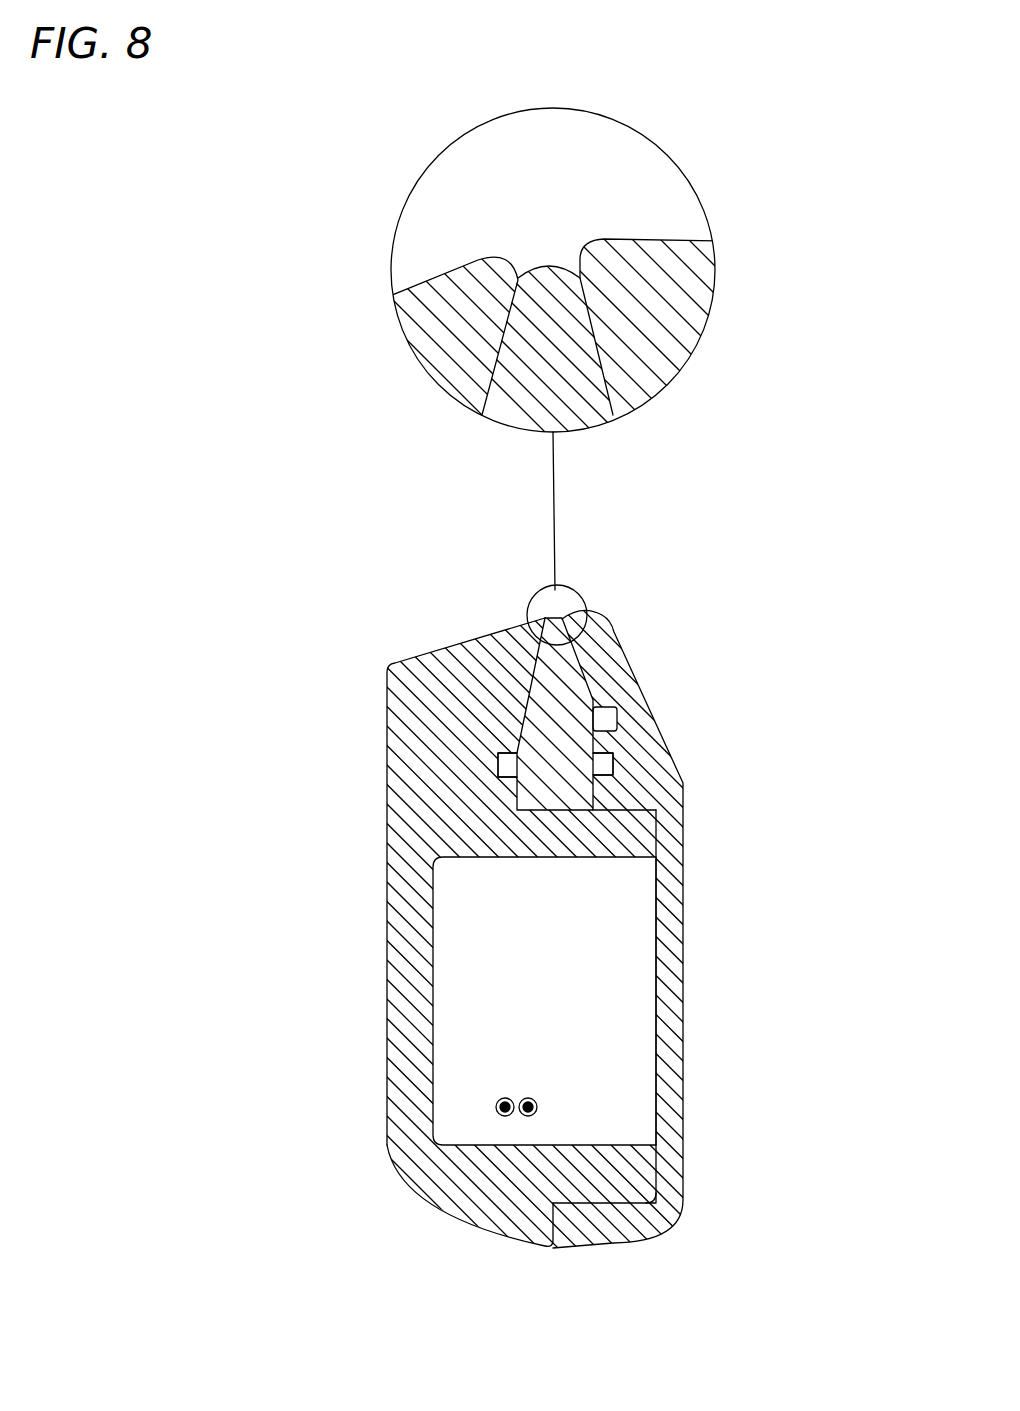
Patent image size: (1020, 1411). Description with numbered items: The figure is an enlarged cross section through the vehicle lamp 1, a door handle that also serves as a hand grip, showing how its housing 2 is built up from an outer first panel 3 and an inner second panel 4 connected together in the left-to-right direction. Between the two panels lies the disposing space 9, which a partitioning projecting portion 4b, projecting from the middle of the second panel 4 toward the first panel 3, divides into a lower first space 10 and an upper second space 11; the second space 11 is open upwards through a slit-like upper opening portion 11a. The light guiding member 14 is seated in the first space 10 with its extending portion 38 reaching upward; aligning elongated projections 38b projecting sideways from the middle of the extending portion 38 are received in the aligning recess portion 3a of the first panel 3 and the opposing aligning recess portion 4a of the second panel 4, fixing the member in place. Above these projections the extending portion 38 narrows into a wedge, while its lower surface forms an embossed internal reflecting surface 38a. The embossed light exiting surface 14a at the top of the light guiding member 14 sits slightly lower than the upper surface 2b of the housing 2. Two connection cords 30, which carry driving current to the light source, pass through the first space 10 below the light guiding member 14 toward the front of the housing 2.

The vehicle lamp 1 is at (336, 616).
The housing 2 is at (385, 1100).
The upper surface 2b is at (596, 255).
The first panel 3 is at (670, 1008).
The aligning recess portion 3a is at (633, 734).
The second panel 4 is at (388, 1047).
The aligning recess portion 4a is at (510, 788).
The partitioning projecting portion 4b is at (650, 845).
The disposing space 9 is at (547, 1010).
The first space 10 is at (440, 967).
The second space 11 is at (510, 380).
The upper opening portion 11a is at (520, 275).
The light guiding member 14 is at (520, 700).
The light exiting surface 14a is at (555, 266).
The connection cords 30 is at (500, 1117).
The extending portion 38 is at (568, 690).
The internal reflecting surface 38a is at (542, 815).
The aligning elongated projections 38b is at (497, 757).